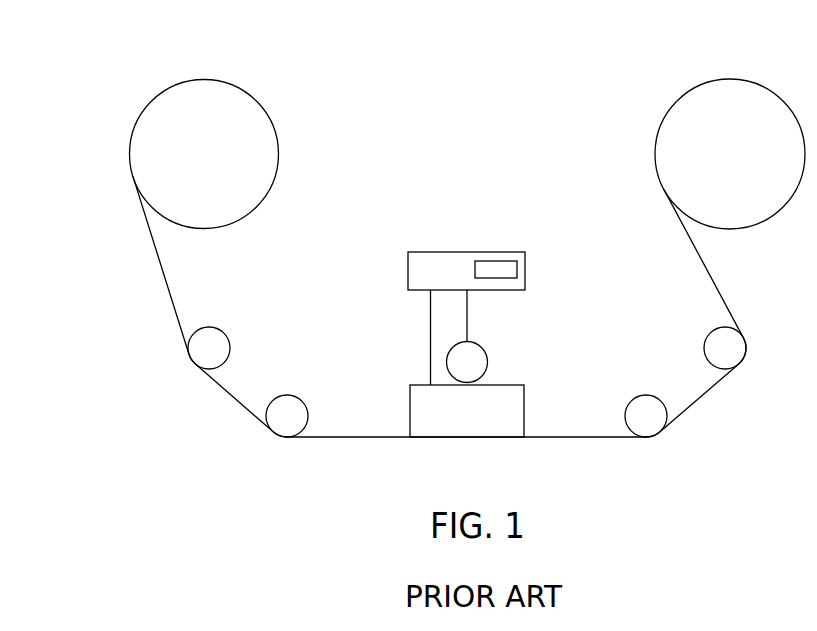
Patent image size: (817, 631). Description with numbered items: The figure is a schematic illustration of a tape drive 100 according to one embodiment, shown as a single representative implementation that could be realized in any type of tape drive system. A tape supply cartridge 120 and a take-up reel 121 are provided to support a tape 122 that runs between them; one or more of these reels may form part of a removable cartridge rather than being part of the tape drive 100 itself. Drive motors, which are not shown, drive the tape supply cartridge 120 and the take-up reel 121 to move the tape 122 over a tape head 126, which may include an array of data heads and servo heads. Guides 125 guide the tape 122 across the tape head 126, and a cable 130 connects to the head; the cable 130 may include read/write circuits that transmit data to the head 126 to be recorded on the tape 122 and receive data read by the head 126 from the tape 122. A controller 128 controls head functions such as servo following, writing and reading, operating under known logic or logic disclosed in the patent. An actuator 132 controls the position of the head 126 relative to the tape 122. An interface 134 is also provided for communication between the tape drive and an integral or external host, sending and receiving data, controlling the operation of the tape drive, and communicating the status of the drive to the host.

The tape drive 100 is at (168, 58).
The tape supply cartridge 120 is at (265, 110).
The take-up reel 121 is at (682, 97).
The tape 122 is at (170, 283).
The guides 125 is at (232, 345).
The tape head 126 is at (410, 403).
The controller 128 is at (438, 251).
The cable 130 is at (430, 335).
The actuator 132 is at (488, 365).
The interface 134 is at (492, 261).